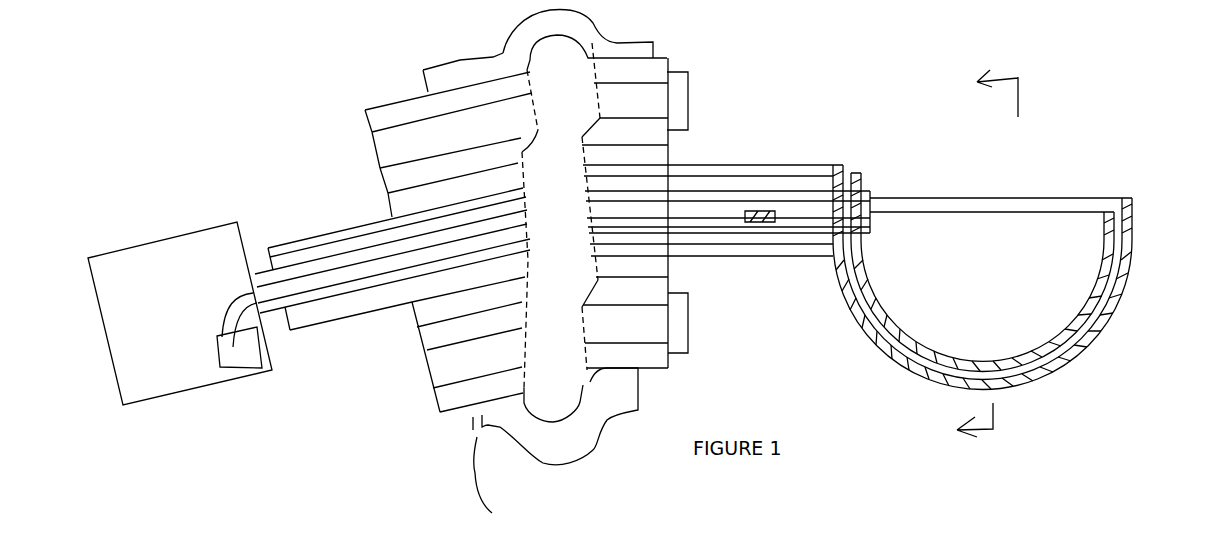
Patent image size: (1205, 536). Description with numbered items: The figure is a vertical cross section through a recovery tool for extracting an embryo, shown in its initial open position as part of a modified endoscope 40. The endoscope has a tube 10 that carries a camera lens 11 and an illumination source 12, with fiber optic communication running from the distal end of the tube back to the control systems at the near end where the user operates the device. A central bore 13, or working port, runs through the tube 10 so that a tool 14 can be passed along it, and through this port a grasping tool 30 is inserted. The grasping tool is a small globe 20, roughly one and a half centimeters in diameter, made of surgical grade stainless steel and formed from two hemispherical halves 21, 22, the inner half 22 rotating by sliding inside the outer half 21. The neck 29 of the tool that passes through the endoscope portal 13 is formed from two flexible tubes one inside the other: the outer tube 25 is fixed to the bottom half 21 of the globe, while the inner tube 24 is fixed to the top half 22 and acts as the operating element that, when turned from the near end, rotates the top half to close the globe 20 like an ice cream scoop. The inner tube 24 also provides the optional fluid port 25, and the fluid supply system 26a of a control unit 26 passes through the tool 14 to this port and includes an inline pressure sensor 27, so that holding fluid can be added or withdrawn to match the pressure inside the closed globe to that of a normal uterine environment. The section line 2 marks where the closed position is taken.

The tube 10 is at (636, 57).
The camera lens 11 is at (683, 96).
The illumination source 12 is at (683, 327).
The central bore 13 is at (657, 155).
The tool 14 is at (377, 308).
The globe 20 is at (375, 518).
The outer hemispherical half 21 is at (1128, 310).
The inner hemispherical half 22 is at (1088, 335).
The inner tube 24 is at (878, 193).
The outer tube 25 is at (813, 168).
The control unit 26 is at (205, 247).
The fluid supply system 26a is at (213, 357).
The inline pressure sensor 27 is at (777, 222).
The neck 29 is at (803, 153).
The grasping tool 30 is at (862, 408).
The modified endoscope 40 is at (812, 87).
The section line 2- 2 is at (1003, 263).